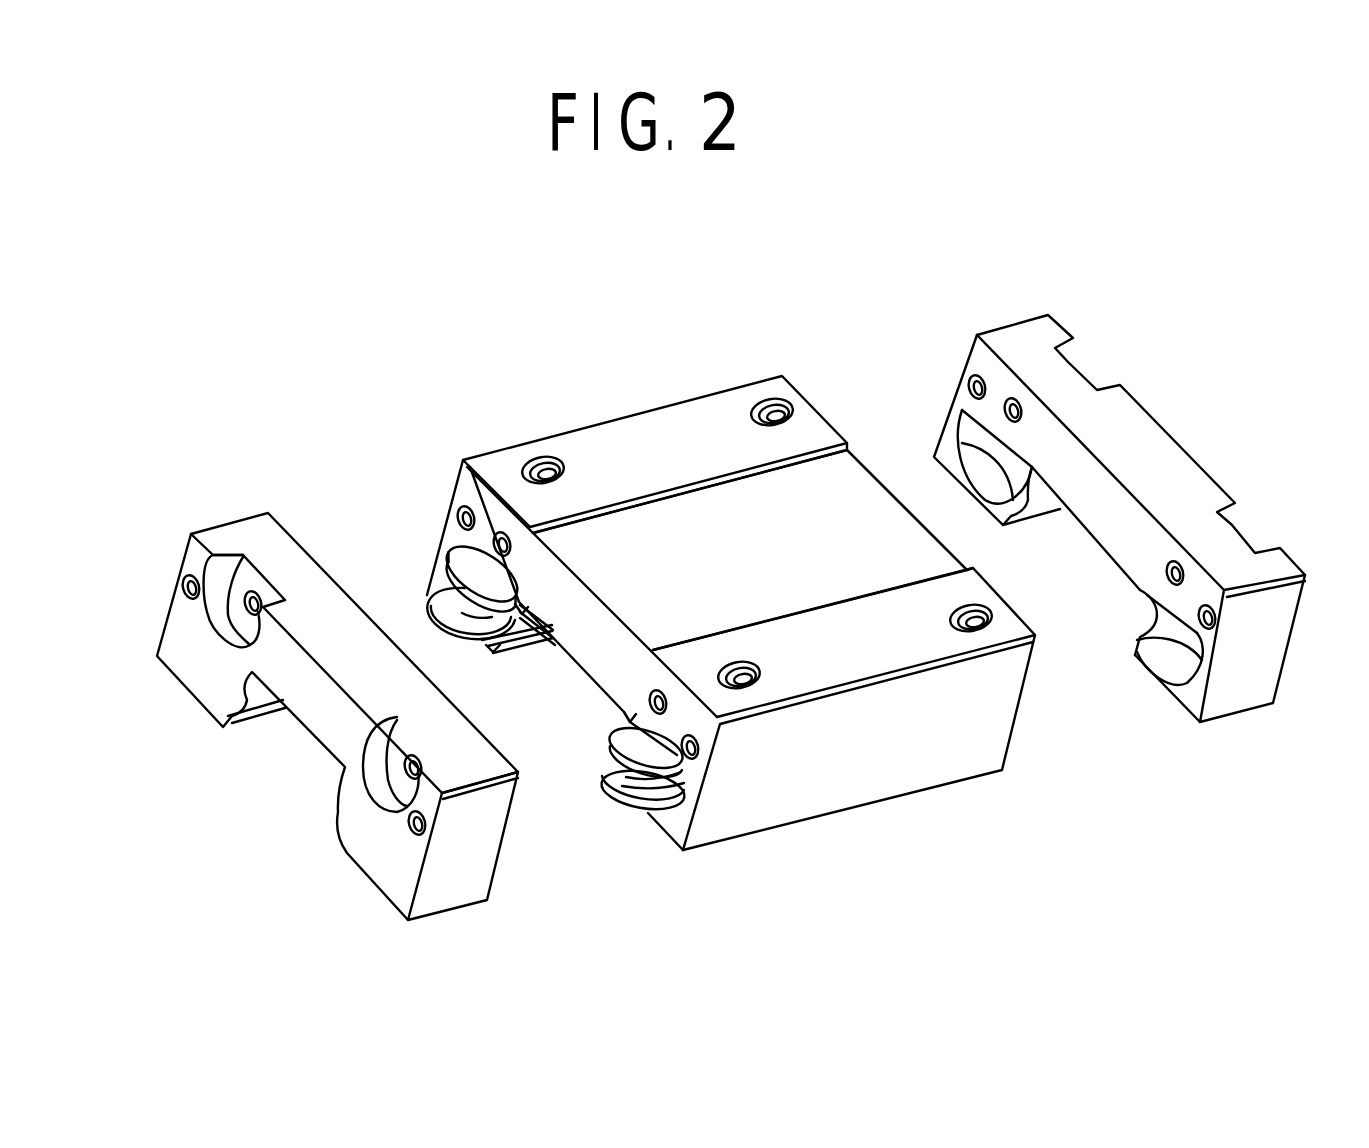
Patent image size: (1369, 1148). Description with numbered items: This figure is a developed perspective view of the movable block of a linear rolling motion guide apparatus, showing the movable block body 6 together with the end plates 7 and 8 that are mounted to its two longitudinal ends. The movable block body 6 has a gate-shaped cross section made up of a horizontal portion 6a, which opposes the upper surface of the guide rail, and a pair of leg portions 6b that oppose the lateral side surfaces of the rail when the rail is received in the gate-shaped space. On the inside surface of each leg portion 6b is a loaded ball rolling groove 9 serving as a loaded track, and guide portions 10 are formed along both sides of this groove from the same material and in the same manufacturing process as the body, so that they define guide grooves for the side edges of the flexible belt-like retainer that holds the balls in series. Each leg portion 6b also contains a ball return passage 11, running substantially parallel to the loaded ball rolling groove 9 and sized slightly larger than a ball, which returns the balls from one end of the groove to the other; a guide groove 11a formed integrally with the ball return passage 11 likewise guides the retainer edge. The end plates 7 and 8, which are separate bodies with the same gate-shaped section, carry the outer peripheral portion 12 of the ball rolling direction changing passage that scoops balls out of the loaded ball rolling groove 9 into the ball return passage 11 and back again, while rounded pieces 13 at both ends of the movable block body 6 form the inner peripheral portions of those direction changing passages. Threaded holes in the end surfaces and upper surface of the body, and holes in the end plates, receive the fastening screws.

The movable block body 6 is at (637, 427).
The horizontal portion 6a is at (578, 598).
The leg portions 6b is at (448, 528).
The end plate 7 is at (240, 538).
The end plate 8 is at (1010, 338).
The loaded ball rolling groove 9 is at (530, 640).
The guide portions 10 is at (494, 635).
The ball return passage 11 is at (472, 545).
The guide groove 11a is at (460, 472).
The outer peripheral portion of ball rolling direction changing passage 12 is at (980, 408).
The rounded pieces (R-pieces) 13 is at (437, 586).